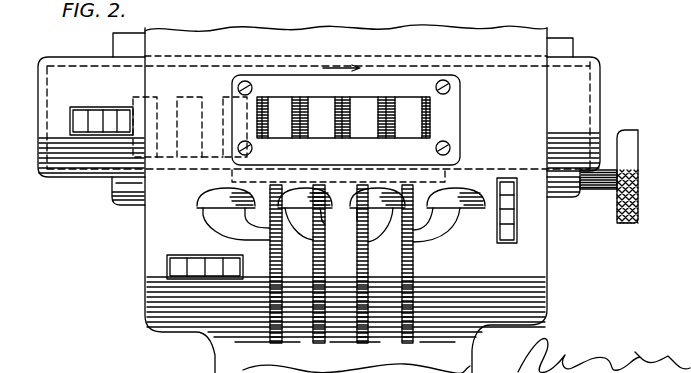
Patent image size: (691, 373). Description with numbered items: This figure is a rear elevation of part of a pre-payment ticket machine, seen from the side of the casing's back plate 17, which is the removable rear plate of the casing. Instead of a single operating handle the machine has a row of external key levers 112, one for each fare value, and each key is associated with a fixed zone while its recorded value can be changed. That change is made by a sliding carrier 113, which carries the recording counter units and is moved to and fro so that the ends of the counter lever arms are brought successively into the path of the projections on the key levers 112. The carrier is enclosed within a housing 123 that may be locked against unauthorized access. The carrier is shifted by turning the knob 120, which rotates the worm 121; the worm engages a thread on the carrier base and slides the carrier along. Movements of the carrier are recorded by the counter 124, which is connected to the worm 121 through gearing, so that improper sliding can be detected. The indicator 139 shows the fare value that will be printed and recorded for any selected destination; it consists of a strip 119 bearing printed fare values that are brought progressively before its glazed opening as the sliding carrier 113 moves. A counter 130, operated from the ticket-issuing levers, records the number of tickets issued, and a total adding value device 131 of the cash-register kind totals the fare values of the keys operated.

The back plate 17 is at (545, 282).
The key levers 112 is at (205, 209).
The sliding carrier 113 is at (185, 157).
The strip 119 is at (192, 97).
The knob 120 is at (632, 133).
The worm 121 is at (590, 189).
The housing 123 is at (70, 67).
The counter 124 is at (517, 220).
The counter 130 is at (167, 271).
The total adding value device 131 is at (80, 134).
The indicator 139 is at (450, 107).